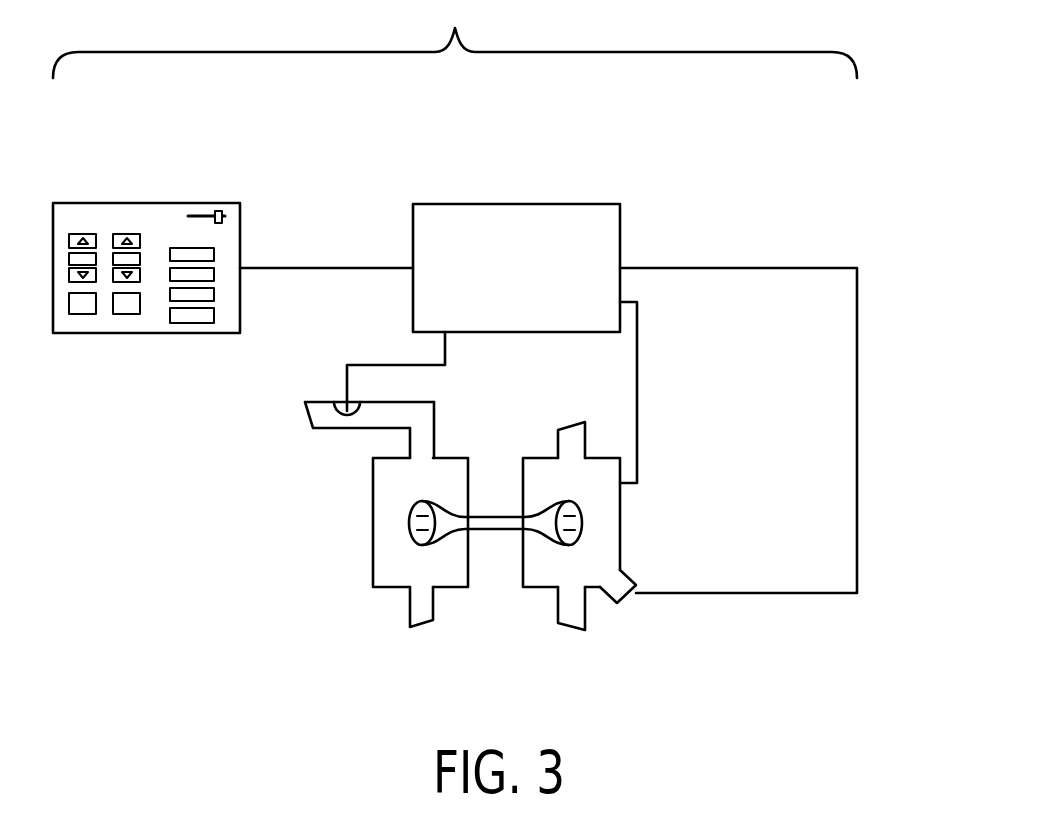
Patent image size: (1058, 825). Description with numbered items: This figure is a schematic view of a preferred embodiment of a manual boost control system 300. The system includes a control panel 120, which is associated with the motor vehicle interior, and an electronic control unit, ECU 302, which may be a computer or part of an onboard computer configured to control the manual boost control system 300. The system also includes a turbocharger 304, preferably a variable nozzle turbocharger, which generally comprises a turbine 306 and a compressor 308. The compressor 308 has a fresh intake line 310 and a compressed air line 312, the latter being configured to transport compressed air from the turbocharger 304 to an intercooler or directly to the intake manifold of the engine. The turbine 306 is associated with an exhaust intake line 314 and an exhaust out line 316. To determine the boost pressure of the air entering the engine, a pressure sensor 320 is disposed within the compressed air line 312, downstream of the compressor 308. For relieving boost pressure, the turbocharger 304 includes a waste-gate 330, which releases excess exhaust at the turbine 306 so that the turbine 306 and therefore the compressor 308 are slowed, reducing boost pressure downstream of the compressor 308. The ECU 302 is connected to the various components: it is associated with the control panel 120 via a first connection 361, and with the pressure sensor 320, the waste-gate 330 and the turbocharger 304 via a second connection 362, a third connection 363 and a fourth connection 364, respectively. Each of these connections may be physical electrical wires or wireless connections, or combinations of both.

The manual boost control system 300 is at (455, 57).
The control panel 120 is at (155, 333).
The electronic control unit 302 is at (535, 204).
The turbocharger 304 is at (642, 506).
The turbine 306 is at (620, 547).
The compressor 308 is at (373, 541).
The fresh intake line 310 is at (422, 623).
The compressed air line 312 is at (424, 421).
The exhaust intake line 314 is at (570, 627).
The exhaust out line 316 is at (572, 427).
The pressure sensor 320 is at (343, 414).
The waste-gate 330 is at (622, 598).
The first connection 361 is at (365, 268).
The second connection 362 is at (372, 360).
The third connection 363 is at (857, 425).
The fourth connection 364 is at (638, 358).